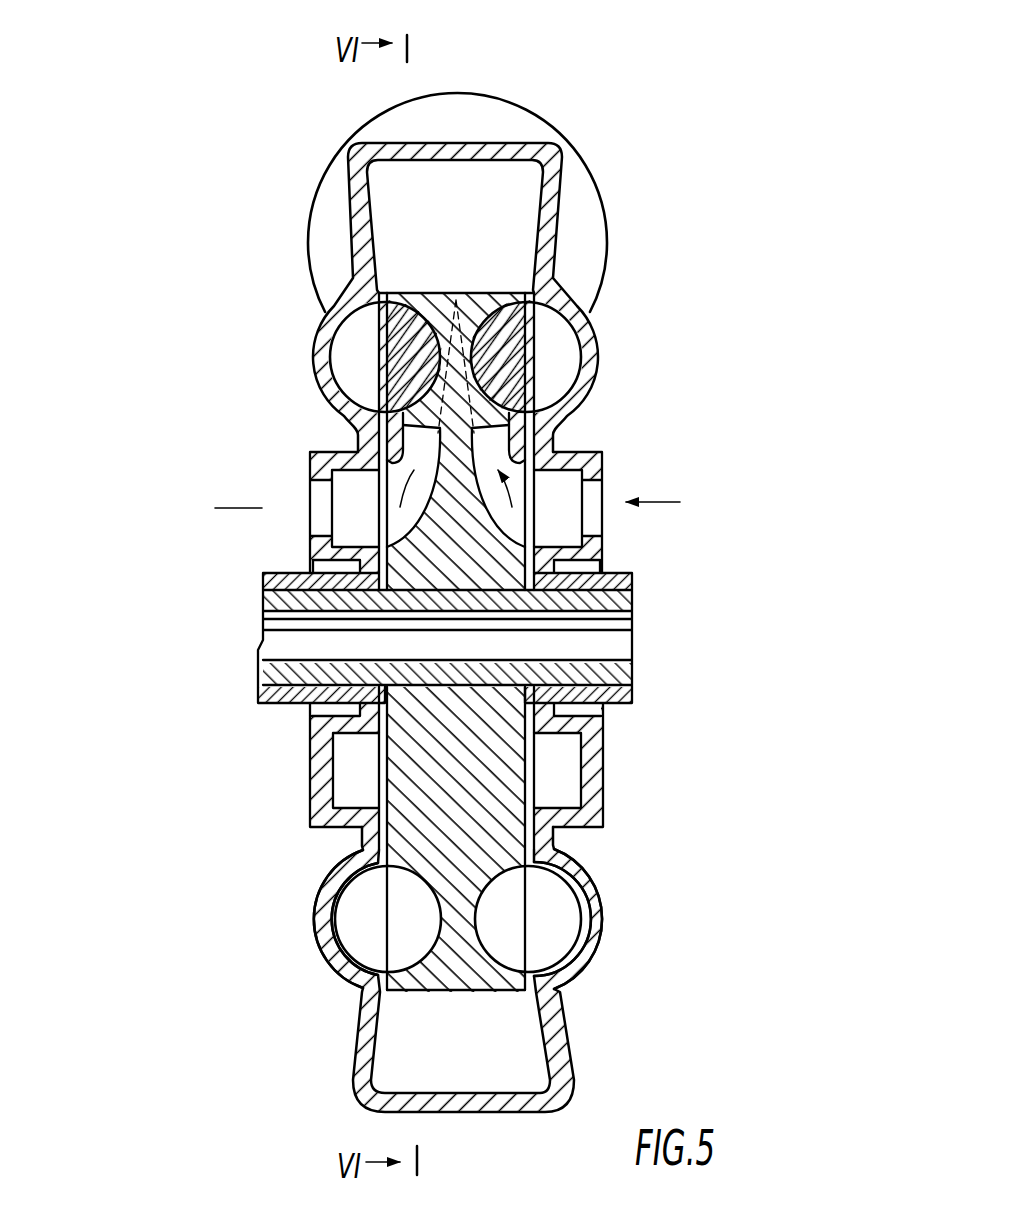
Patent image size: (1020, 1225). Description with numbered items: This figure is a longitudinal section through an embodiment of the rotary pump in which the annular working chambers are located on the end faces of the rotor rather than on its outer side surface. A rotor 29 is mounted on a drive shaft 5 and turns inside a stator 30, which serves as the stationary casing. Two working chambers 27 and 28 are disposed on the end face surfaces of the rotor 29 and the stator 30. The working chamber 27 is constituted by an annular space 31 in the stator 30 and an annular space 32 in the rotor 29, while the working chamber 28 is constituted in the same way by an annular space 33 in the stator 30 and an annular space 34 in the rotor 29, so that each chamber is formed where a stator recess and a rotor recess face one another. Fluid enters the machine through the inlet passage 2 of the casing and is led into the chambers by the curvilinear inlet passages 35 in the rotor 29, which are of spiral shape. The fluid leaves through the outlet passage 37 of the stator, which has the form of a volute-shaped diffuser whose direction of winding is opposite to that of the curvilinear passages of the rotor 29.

The inlet passage 2 is at (343, 492).
The drive shaft 5 is at (603, 592).
The working chamber 27 is at (366, 899).
The working chamber 28 is at (556, 900).
The rotor 29 is at (405, 757).
The stator 30 is at (590, 762).
The annular space 31 is at (353, 907).
The annular space 32 is at (400, 940).
The annular space 33 is at (562, 918).
The annular space 34 is at (515, 932).
The curvilinear inlet passages 35 is at (392, 453).
The outlet passage 37 is at (513, 233).